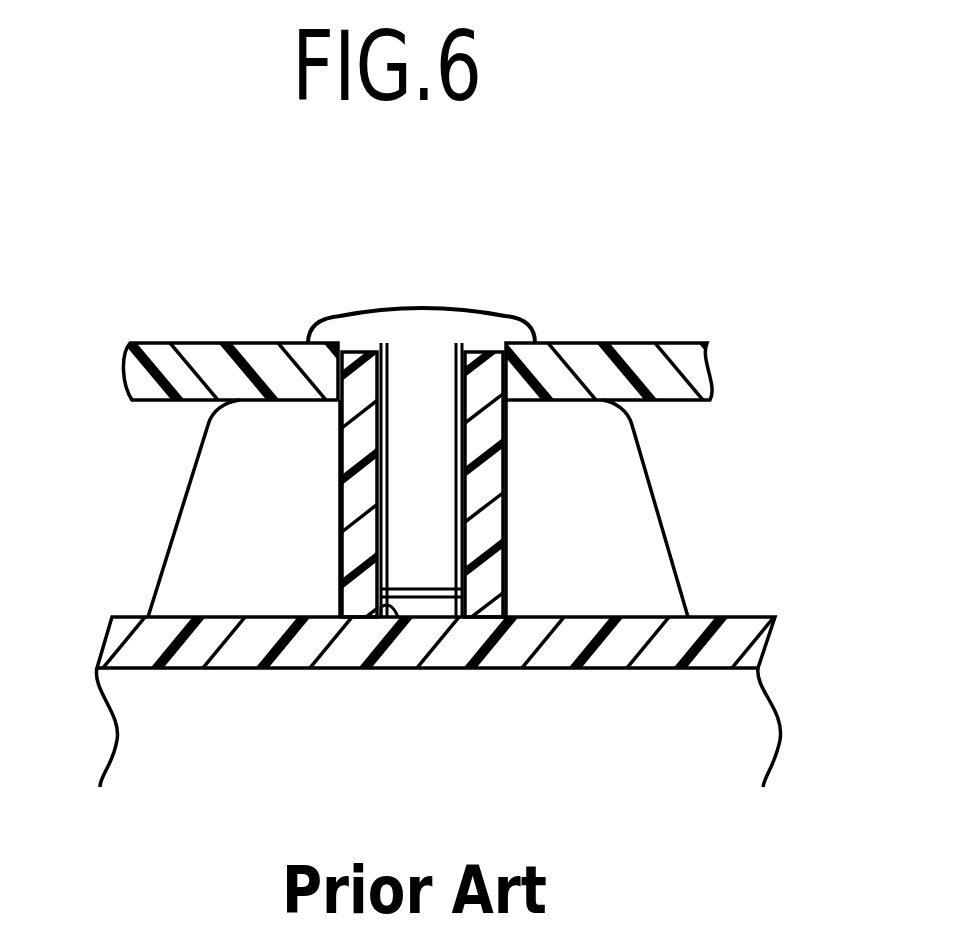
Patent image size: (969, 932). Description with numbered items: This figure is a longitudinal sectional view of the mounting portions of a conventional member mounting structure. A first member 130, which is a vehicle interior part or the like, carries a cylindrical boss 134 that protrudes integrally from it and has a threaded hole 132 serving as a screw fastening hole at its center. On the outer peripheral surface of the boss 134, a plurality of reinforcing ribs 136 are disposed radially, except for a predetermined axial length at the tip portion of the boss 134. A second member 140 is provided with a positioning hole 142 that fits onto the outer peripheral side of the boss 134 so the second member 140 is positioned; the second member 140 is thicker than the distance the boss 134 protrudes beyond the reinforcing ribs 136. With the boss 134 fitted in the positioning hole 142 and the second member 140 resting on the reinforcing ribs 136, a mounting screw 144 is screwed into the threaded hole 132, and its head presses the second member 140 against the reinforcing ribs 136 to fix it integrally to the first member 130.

The first member 130 is at (614, 650).
The threaded hole 132 is at (401, 614).
The cylindrical boss 134 is at (360, 395).
The reinforcing ribs 136 is at (225, 540).
The second member 140 is at (207, 372).
The positioning hole 142 is at (488, 362).
The mounting screw 144 is at (415, 325).